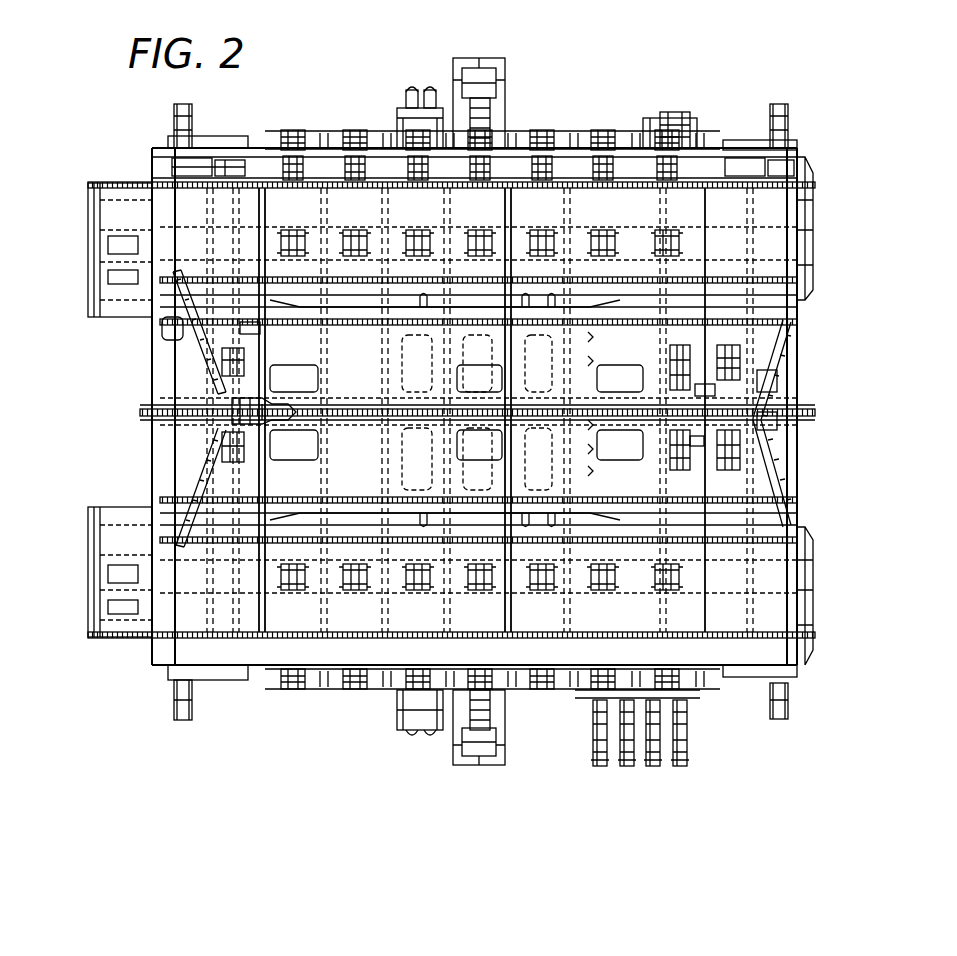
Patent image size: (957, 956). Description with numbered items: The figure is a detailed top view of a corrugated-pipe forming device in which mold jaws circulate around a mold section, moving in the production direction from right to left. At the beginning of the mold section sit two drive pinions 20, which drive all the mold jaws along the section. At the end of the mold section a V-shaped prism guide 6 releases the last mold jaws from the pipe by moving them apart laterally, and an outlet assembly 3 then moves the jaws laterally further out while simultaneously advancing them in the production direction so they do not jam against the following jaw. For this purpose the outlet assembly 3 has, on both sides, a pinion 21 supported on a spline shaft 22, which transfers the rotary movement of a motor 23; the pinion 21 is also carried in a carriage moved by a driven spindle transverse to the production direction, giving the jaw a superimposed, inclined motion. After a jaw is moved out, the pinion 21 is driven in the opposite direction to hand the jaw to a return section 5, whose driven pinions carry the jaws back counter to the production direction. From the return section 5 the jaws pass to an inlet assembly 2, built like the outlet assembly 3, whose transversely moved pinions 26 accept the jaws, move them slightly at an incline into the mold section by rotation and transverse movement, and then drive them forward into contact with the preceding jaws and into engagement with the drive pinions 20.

The inlet assembly 2 is at (820, 252).
The outlet assembly 3 is at (260, 148).
The return section 5 is at (562, 129).
The V-shaped prism guide 6 is at (243, 392).
The drive pinions 20 is at (690, 440).
The pinion 21 is at (218, 458).
The spline shaft 22 is at (200, 327).
The motor 23 is at (172, 116).
The transversely moved pinions 26 is at (740, 463).